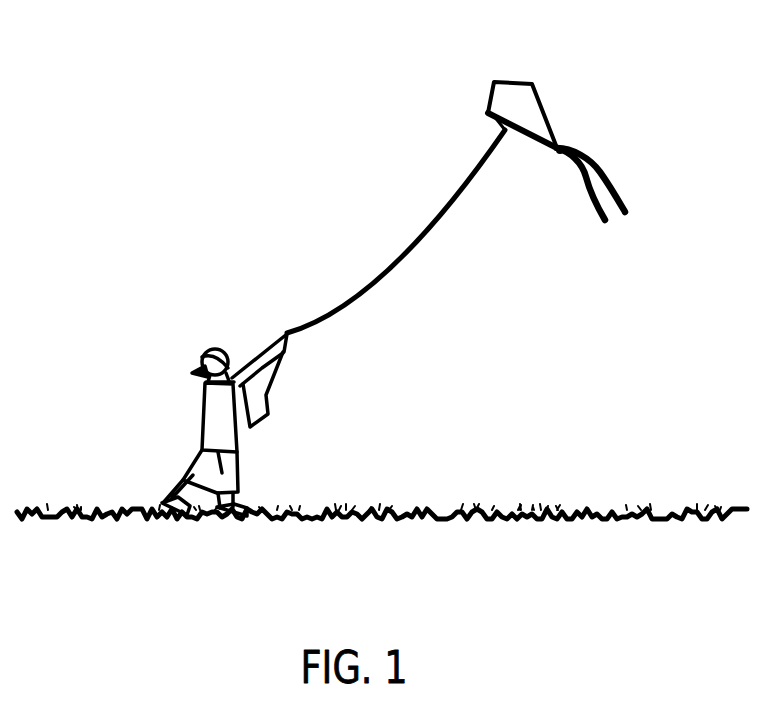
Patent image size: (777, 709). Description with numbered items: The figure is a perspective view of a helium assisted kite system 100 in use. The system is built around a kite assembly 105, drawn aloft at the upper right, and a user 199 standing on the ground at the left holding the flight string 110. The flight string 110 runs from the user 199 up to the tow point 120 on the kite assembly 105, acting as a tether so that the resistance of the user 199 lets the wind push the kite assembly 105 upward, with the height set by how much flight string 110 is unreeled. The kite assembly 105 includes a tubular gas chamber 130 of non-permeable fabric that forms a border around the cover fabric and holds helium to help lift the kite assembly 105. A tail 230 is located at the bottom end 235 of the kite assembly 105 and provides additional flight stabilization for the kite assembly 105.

The helium assisted kite system 100 is at (487, 180).
The kite assembly 105 is at (563, 124).
The flight string 110 is at (420, 230).
The tow point 120 is at (493, 133).
The tubular gas chamber 130 is at (505, 78).
The user 199 is at (202, 350).
The tail 230 is at (618, 196).
The bottom end 235 is at (565, 142).